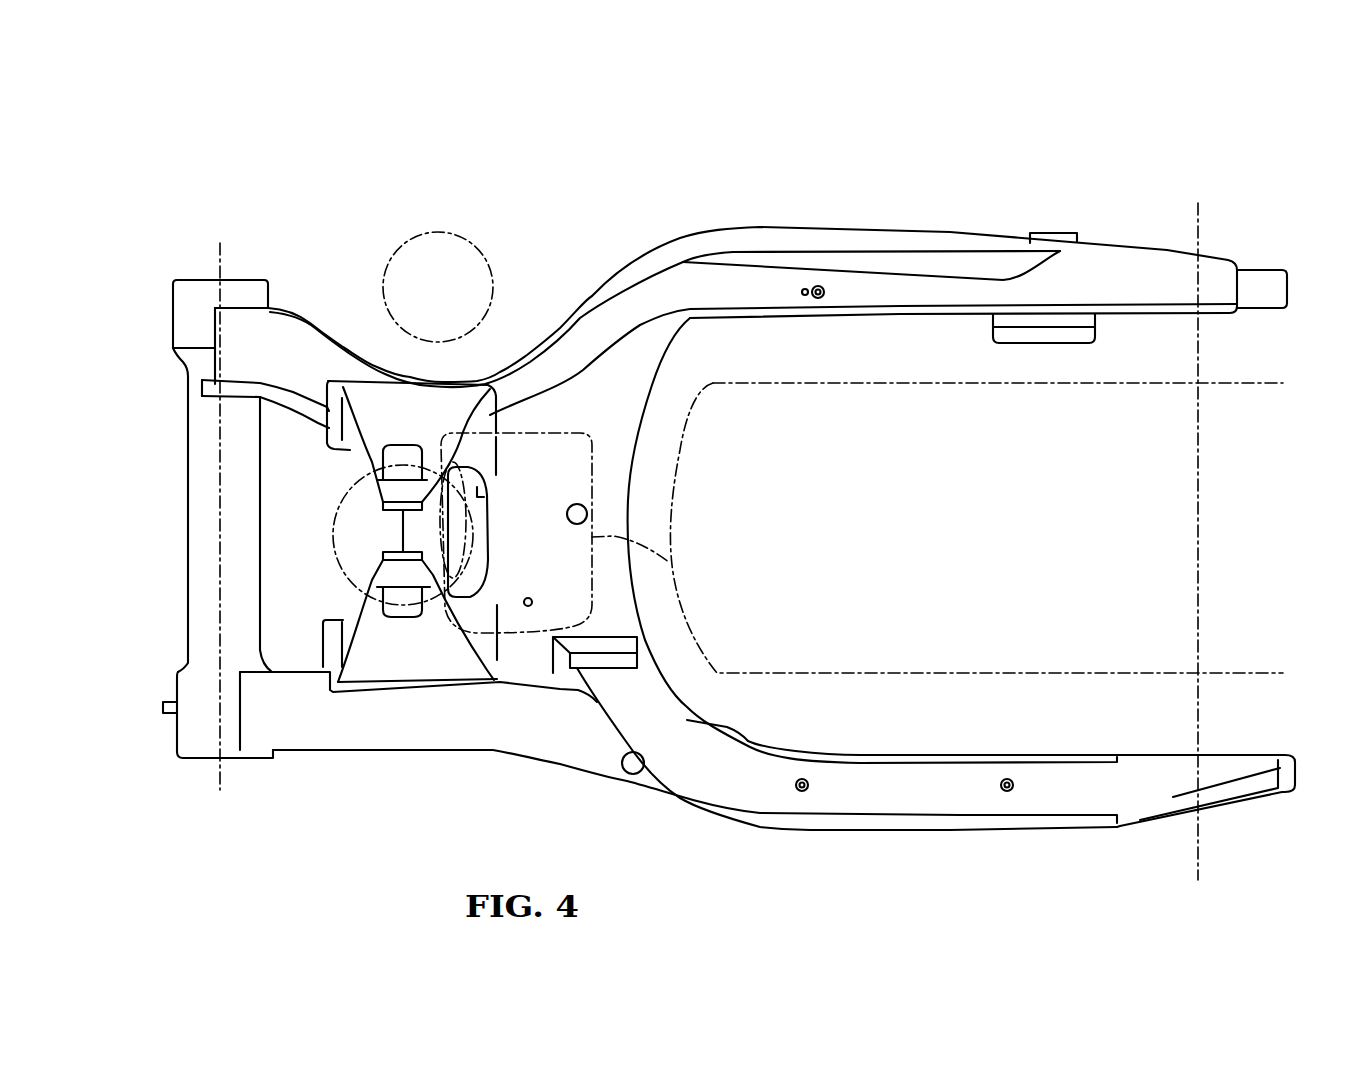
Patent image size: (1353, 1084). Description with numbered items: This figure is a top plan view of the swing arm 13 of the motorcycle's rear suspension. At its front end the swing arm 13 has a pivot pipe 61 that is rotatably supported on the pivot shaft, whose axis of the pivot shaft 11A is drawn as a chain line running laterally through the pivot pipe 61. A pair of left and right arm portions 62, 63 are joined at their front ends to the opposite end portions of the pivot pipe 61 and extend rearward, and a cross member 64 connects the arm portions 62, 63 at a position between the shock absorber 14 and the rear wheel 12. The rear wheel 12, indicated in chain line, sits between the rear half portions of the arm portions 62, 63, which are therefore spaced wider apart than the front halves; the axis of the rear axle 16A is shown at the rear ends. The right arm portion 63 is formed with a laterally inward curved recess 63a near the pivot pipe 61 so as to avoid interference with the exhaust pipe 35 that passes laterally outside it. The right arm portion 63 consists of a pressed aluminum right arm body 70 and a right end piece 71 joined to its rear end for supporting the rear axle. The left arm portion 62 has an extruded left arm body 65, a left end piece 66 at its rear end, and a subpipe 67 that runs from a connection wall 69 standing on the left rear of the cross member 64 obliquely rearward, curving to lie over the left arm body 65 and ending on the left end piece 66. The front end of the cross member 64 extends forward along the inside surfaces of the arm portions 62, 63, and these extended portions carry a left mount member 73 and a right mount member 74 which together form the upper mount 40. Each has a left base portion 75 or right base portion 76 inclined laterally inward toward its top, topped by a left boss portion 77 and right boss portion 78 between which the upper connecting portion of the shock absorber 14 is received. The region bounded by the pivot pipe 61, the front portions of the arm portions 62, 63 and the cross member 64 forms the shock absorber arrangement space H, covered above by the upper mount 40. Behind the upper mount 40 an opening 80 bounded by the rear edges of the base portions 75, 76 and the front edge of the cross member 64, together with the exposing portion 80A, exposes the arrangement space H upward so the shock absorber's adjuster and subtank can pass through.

The swing arm 13 is at (968, 138).
The axis of the pivot shaft 11A is at (222, 421).
The pivot pipe 61 is at (188, 489).
The right arm body 70 is at (800, 220).
The right arm portion 63 is at (726, 321).
The curved recess 63a is at (507, 333).
The right end piece 71 is at (1265, 266).
The exhaust pipe 35 is at (482, 235).
The left arm body 65 is at (840, 834).
The left arm portion 62 is at (767, 749).
The subpipe 67 is at (962, 831).
The left end piece 66 is at (1260, 798).
The connection wall 69 is at (603, 655).
The cross member 64 is at (630, 517).
The upper mount 40 is at (128, 533).
The right mount member 74 is at (340, 475).
The left mount member 73 is at (350, 596).
The right base portion 76 is at (363, 447).
The left base portion 75 is at (357, 613).
The right boss portion 78 is at (383, 490).
The left boss portion 77 is at (383, 577).
The shock absorber 14 is at (337, 532).
The opening 80 is at (486, 487).
The shock absorber arrangement space H is at (450, 540).
The exposing portion 80A is at (672, 567).
The rear wheel 12 is at (680, 447).
The axis of the rear axle 16A is at (1200, 488).